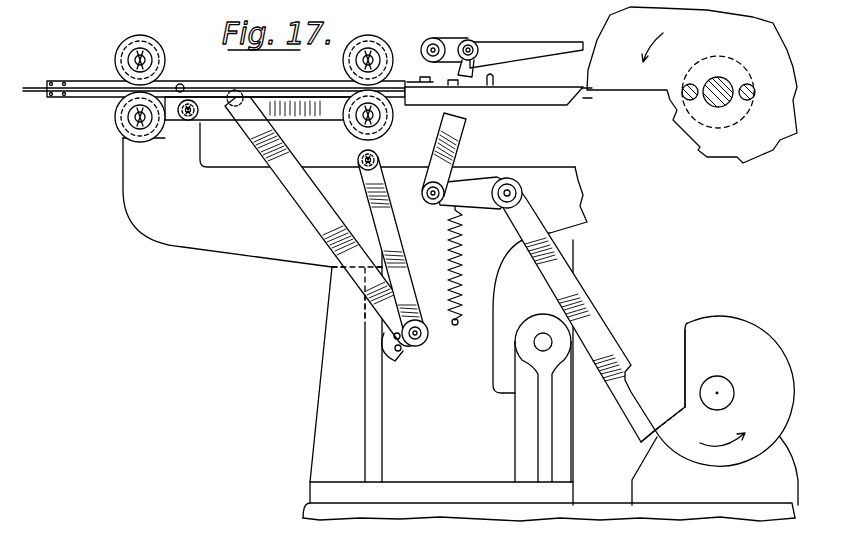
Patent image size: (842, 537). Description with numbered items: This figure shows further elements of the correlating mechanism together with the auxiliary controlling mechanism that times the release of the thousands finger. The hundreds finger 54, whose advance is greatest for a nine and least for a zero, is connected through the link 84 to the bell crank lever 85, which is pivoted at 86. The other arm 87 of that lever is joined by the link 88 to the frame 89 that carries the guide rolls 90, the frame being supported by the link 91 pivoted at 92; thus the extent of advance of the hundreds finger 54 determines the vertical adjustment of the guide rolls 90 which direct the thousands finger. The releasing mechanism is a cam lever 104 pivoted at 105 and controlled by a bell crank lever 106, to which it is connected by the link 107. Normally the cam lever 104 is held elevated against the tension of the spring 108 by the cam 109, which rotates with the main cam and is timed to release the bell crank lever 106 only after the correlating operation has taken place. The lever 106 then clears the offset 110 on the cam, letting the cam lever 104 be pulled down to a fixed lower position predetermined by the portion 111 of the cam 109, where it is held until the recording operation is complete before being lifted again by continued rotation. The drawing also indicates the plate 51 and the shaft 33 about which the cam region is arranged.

The shaft of drum 33 is at (720, 84).
The cam plate 51 is at (640, 78).
The hundreds finger 54 is at (300, 84).
The link 84 is at (243, 94).
The bell crank lever 85 is at (296, 202).
The pivot 86 is at (406, 356).
The other arm 87 is at (426, 341).
The link 88 is at (386, 199).
The frame 89 is at (358, 157).
The guide rolls 90 is at (368, 36).
The link 91 is at (298, 110).
The pivot 92 is at (185, 120).
The cam lever 104 is at (537, 50).
The pivot 105 is at (432, 46).
The bell crank lever 106 is at (577, 290).
The link 107 is at (462, 131).
The spring 108 is at (463, 270).
The cam 109 is at (722, 327).
The offset 110 is at (656, 418).
The portion 111 is at (685, 397).